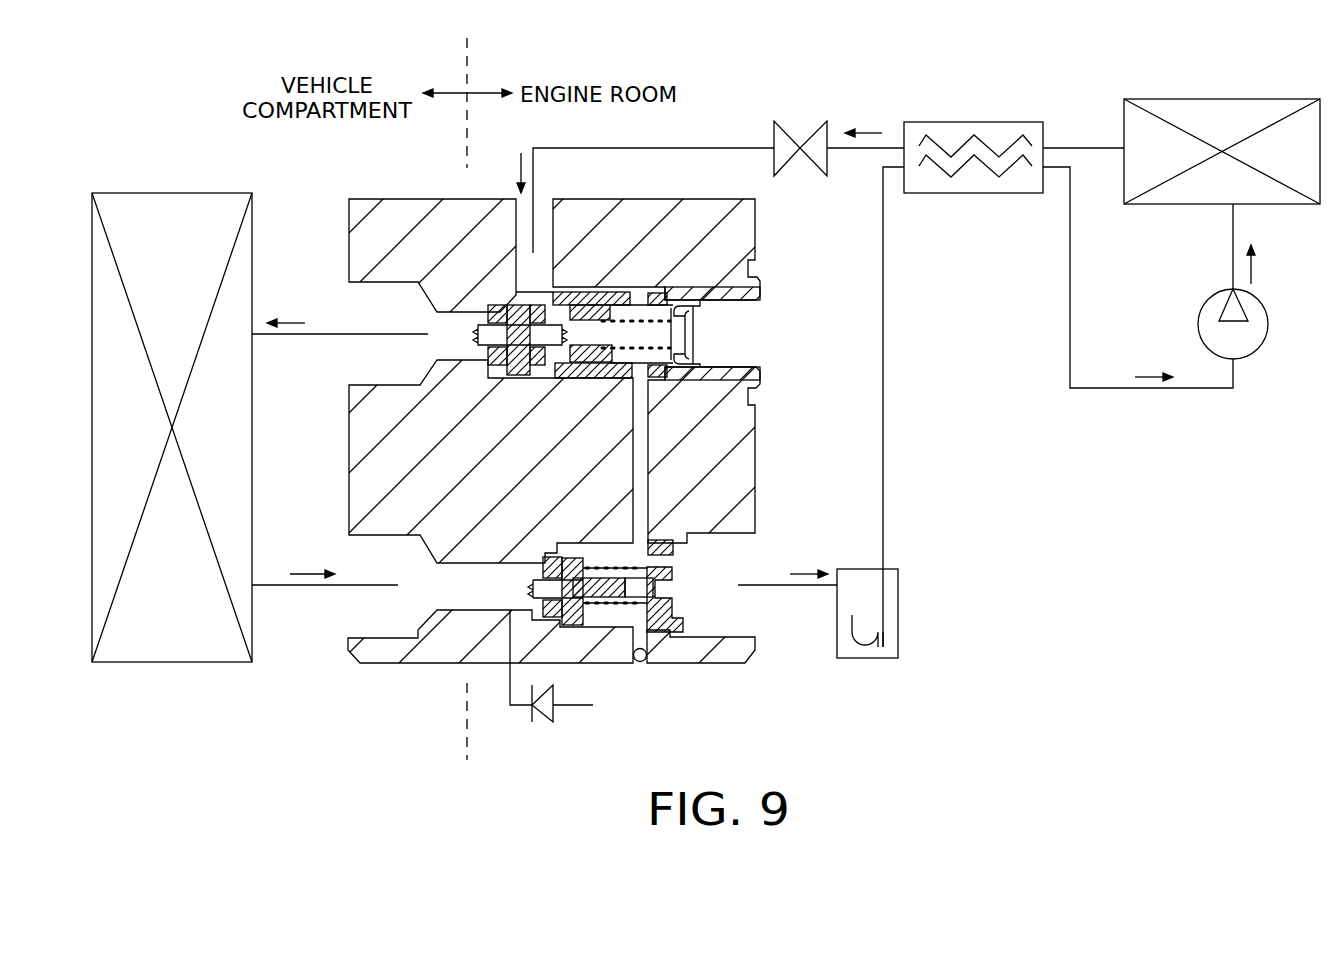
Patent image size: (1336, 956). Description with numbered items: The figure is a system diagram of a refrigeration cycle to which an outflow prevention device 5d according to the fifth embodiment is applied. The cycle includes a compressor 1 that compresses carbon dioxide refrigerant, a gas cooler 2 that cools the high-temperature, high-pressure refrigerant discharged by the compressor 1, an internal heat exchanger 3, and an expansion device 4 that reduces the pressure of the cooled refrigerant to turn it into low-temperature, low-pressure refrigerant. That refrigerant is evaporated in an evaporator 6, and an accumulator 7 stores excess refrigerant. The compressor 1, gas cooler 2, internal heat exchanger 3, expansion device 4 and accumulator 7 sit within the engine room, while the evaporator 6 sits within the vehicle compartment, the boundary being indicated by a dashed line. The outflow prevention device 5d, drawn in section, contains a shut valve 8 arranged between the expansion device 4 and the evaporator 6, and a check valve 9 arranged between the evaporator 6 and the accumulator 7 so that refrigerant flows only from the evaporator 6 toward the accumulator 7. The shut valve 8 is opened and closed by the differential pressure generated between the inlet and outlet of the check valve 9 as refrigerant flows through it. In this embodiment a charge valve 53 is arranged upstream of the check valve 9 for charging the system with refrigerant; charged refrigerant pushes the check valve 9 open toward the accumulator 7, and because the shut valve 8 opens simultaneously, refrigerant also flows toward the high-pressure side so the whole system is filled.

The compressor 1 is at (1260, 296).
The gas cooler 2 is at (1193, 99).
The internal heat exchanger 3 is at (947, 121).
The expansion device 4 is at (788, 122).
The outflow prevention device 5d is at (645, 198).
The evaporator 6 is at (185, 193).
The accumulator 7 is at (898, 610).
The shut valve 8 is at (470, 335).
The check valve 9 is at (570, 622).
The charge valve 53 is at (540, 722).